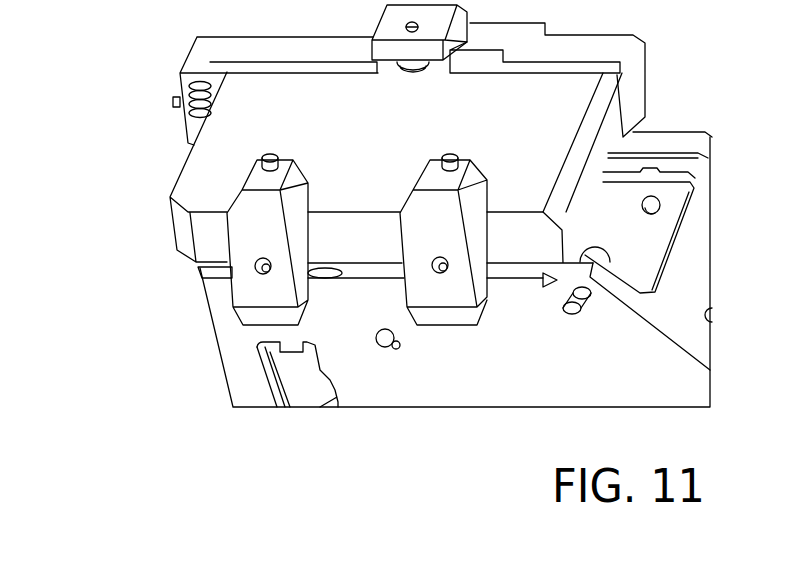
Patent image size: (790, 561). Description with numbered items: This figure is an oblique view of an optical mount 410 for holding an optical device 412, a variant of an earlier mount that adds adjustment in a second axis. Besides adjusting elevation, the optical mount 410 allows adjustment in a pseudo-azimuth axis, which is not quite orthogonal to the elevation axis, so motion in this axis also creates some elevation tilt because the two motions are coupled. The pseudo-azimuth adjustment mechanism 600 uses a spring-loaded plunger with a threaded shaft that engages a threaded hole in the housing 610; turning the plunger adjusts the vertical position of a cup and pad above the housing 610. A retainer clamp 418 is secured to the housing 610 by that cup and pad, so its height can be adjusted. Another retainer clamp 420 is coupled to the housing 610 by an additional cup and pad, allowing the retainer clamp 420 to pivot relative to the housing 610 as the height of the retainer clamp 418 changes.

The optical mount 410 is at (128, 165).
The optical device 412 is at (187, 192).
The retainer clamp 418 is at (250, 240).
The retainer clamp 420 is at (463, 283).
The pseudo-azimuth adjustment mechanism 600 is at (253, 363).
The housing 610 is at (483, 375).